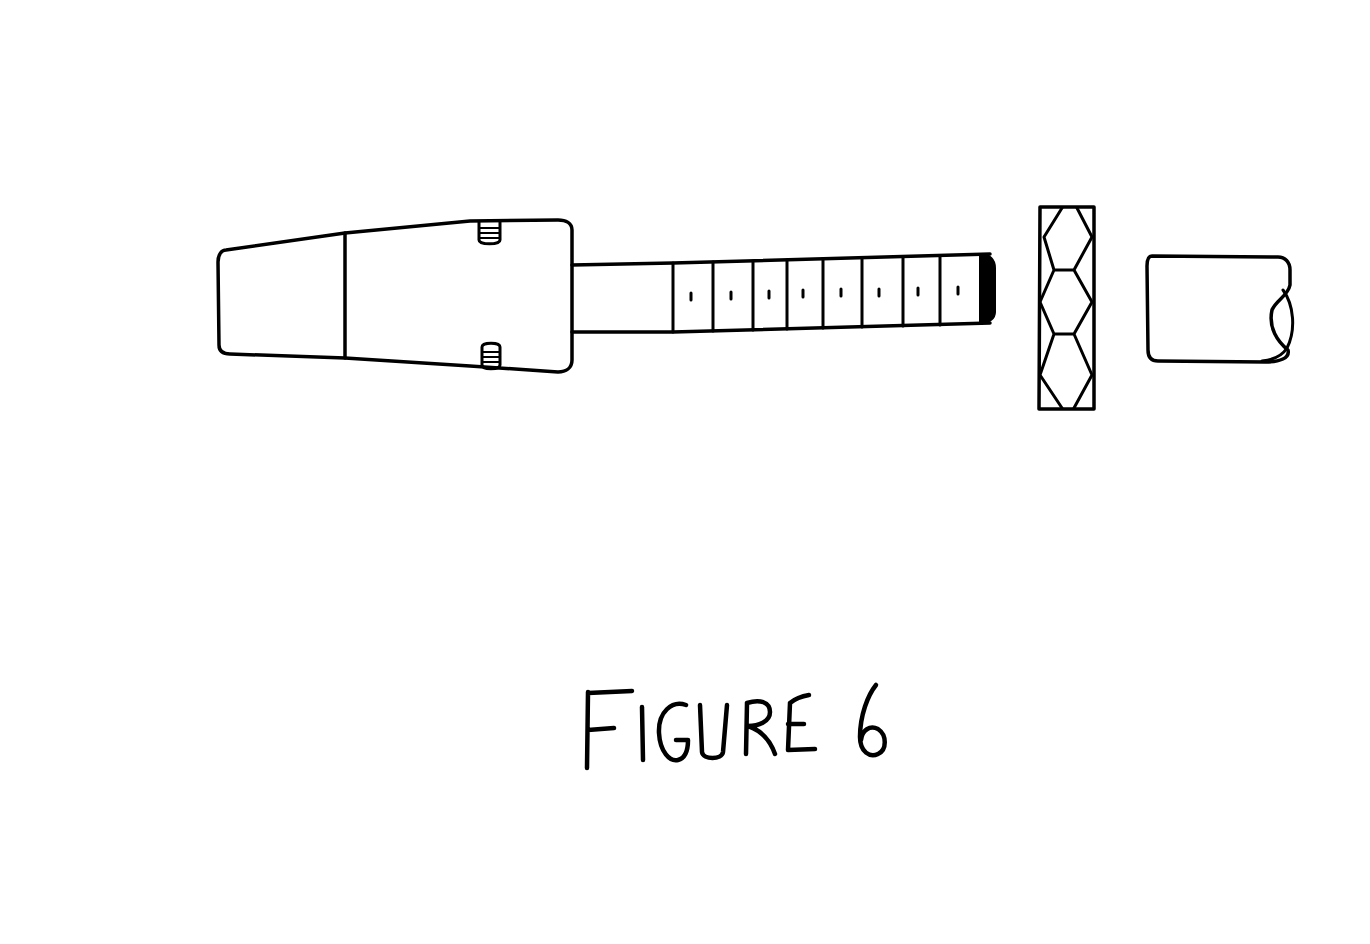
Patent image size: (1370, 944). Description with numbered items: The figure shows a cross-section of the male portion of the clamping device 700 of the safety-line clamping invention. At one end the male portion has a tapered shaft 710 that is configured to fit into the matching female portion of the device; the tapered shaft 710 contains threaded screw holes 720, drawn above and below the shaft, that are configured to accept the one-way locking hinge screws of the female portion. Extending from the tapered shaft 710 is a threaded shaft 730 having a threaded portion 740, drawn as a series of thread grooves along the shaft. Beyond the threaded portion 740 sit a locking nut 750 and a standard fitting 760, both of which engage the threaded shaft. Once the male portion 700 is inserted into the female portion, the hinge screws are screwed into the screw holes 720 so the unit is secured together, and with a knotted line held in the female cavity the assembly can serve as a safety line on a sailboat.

The male portion of clamping device 700 is at (311, 551).
The tapered shaft 710 is at (305, 233).
The threaded screw hole 720 is at (496, 222).
The threaded shaft 730 is at (627, 263).
The threaded portion of shaft 740 is at (850, 257).
The locking nut 750 is at (1068, 207).
The standard fitting 760 is at (1262, 362).